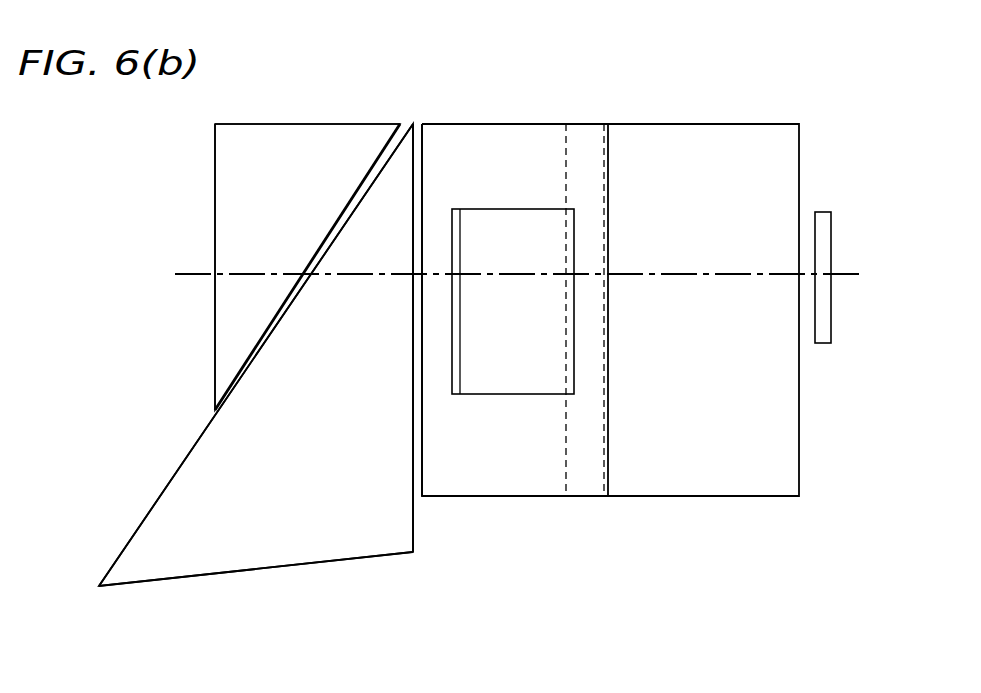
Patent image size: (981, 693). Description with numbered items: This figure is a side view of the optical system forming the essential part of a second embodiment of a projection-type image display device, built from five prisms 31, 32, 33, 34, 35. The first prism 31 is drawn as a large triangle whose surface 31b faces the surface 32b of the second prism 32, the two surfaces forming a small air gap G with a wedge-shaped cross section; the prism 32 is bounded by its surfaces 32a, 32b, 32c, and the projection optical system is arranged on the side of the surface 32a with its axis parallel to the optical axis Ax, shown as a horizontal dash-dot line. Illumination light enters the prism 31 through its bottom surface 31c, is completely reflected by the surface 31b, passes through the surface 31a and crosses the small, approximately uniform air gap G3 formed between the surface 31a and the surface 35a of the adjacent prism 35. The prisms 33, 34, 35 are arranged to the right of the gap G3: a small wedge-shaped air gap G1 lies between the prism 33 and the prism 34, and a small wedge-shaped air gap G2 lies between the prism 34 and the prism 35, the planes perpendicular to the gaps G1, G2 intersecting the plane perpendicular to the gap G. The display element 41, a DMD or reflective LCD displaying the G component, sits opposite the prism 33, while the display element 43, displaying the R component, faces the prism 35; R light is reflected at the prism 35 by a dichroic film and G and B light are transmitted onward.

The prism 31 is at (253, 568).
The surface of prism 31 31a is at (415, 470).
The surface of prism 31 31b is at (158, 495).
The surface of prism 31 31c is at (162, 580).
The prism 32 is at (339, 124).
The surface of prism 32 32a is at (215, 165).
The surface of prism 32 32b is at (371, 172).
The surface of prism 32 32c is at (268, 124).
The prism 33 is at (734, 124).
The prism 34 is at (558, 124).
The prism 35 is at (469, 124).
The surface of prism 35 35a is at (421, 427).
The display element 41 is at (824, 212).
The display element 43 is at (492, 209).
The optical axis Ax is at (360, 276).
The air gap G is at (405, 115).
The air gap G1 is at (604, 499).
The air gap G2 is at (566, 499).
The air gap G3 is at (421, 500).